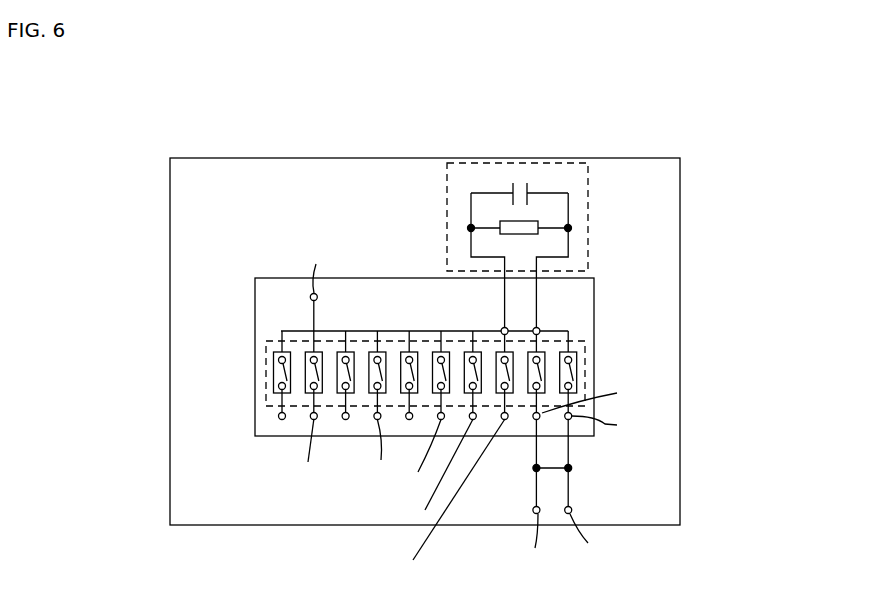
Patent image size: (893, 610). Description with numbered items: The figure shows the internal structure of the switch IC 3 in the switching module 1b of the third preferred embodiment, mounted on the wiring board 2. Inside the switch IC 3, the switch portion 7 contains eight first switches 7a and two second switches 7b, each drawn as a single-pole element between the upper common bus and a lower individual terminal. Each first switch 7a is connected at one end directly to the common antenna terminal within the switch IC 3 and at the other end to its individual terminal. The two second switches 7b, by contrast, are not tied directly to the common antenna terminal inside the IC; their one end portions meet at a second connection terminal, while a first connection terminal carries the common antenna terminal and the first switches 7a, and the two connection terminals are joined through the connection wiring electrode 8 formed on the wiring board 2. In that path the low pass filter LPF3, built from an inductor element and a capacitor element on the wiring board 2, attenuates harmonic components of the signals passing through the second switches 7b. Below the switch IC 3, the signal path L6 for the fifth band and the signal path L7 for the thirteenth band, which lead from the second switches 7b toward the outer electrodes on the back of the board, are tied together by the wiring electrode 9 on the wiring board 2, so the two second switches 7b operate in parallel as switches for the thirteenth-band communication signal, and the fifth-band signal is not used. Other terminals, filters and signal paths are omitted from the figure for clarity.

The switching module 1b is at (600, 110).
The wiring board 2 is at (301, 158).
The switch IC 3 is at (368, 437).
The switch portion 7 is at (266, 377).
The first switch 7a is at (277, 387).
The second switch 7b is at (522, 365).
The connection wiring electrode 8 is at (572, 209).
The wiring electrode 9 is at (545, 470).
The low pass filter LPF3 is at (589, 193).
The signal path SL6 L6 is at (533, 460).
The signal path SL7 L7 is at (571, 455).